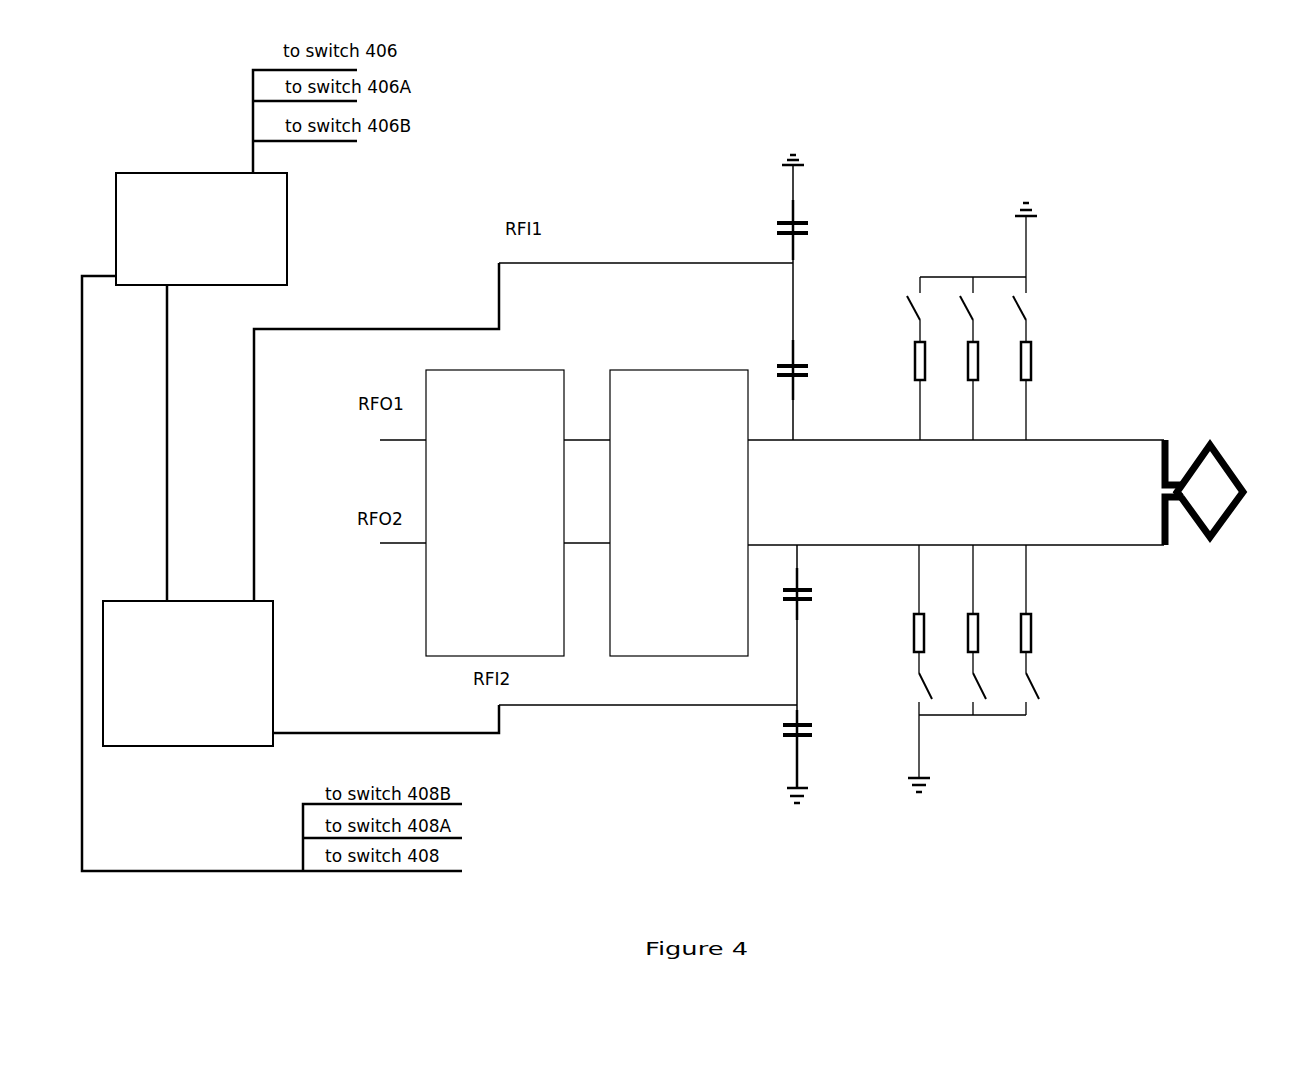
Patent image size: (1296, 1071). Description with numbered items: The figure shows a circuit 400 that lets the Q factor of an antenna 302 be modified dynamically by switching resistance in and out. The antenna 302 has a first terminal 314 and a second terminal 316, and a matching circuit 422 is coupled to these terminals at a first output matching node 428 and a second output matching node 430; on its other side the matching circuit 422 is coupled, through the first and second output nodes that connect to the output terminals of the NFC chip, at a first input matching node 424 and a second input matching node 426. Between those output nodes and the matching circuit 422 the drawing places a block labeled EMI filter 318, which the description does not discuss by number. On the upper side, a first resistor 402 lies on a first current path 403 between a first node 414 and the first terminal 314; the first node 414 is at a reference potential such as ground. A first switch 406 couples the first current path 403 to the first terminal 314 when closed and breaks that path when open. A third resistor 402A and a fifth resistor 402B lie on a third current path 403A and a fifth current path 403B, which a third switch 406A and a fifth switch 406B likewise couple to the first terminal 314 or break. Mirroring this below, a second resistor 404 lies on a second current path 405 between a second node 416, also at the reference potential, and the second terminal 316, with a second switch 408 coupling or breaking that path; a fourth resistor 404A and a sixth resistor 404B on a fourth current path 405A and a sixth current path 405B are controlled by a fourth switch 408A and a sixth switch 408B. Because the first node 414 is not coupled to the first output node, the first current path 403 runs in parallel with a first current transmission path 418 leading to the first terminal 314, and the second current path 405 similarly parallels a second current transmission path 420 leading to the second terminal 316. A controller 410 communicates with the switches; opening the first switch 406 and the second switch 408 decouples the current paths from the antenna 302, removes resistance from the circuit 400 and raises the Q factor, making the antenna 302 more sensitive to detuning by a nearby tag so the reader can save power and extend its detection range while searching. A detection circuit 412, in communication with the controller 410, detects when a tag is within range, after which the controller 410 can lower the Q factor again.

The circuit 400 is at (1142, 177).
The controller 410 is at (201, 229).
The detection circuit 412 is at (188, 673).
The EMI filter 318 is at (495, 513).
The matching circuit 422 is at (679, 513).
The first input matching node 424 is at (587, 428).
The second input matching node 426 is at (587, 533).
The first output matching node 428 is at (750, 440).
The second output matching node 430 is at (750, 545).
The first current transmission path 418 is at (842, 435).
The second current transmission path 420 is at (872, 545).
The first node 414 is at (1032, 288).
The second node 416 is at (1027, 705).
The first switch 406 is at (1033, 318).
The third switch 406A is at (983, 303).
The fifth switch 406B is at (915, 317).
The first resistor 402 is at (1032, 363).
The third resistor 402A is at (980, 372).
The fifth resistor 402B is at (905, 376).
The first current path 403 is at (1032, 427).
The third current path 403A is at (973, 418).
The fifth current path 403B is at (915, 412).
The second current path 405 is at (1028, 573).
The fourth current path 405A is at (973, 567).
The sixth current path 405B is at (920, 582).
The second resistor 404 is at (1030, 627).
The fourth resistor 404A is at (970, 625).
The sixth resistor 404B is at (913, 640).
The second switch 408 is at (1028, 690).
The fourth switch 408A is at (1013, 697).
The sixth switch 408B is at (918, 698).
The first terminal 314 is at (1168, 450).
The second terminal 316 is at (1170, 537).
The antenna 302 is at (1228, 523).